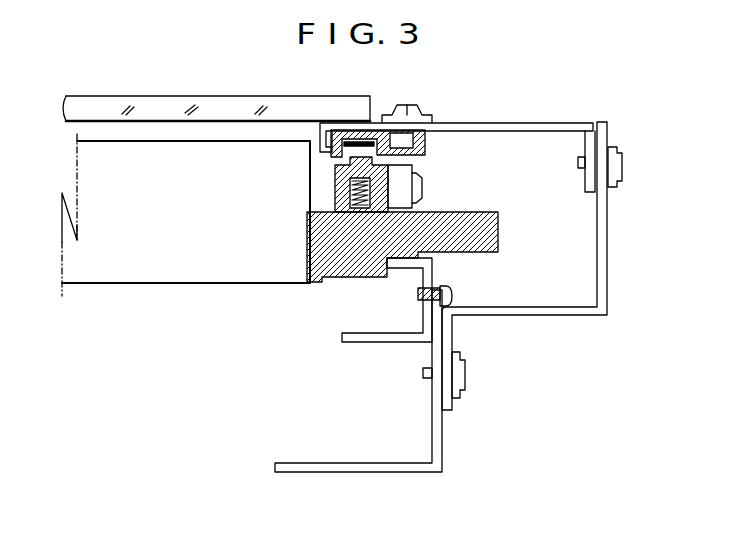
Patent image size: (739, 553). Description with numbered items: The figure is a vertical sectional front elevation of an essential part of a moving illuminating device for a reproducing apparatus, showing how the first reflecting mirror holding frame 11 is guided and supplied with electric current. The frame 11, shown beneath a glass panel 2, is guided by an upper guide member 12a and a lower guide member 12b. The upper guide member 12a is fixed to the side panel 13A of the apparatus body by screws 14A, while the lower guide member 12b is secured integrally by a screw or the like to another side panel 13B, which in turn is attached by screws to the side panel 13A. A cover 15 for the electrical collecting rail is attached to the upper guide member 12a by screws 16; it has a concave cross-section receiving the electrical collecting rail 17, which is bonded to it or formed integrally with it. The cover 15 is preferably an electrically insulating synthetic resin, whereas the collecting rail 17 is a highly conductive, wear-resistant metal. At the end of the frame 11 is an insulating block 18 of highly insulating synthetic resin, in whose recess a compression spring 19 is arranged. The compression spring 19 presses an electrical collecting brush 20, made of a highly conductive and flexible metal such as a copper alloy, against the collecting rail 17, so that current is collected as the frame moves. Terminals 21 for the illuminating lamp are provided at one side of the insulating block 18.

The glass panel 2 is at (342, 105).
The frame 11 is at (180, 285).
The upper guide member 12a is at (540, 123).
The lower guide member 12b is at (402, 262).
The side panel 13A is at (604, 285).
The side panel 13B is at (445, 433).
The screws 14A is at (615, 186).
The cover 15 is at (345, 132).
The screws 16 is at (423, 108).
The electrical collecting rail 17 is at (348, 148).
The insulating block 18 is at (335, 282).
The compression spring 19 is at (348, 195).
The electrical collecting brush 20 is at (338, 172).
The terminals 21 is at (422, 185).